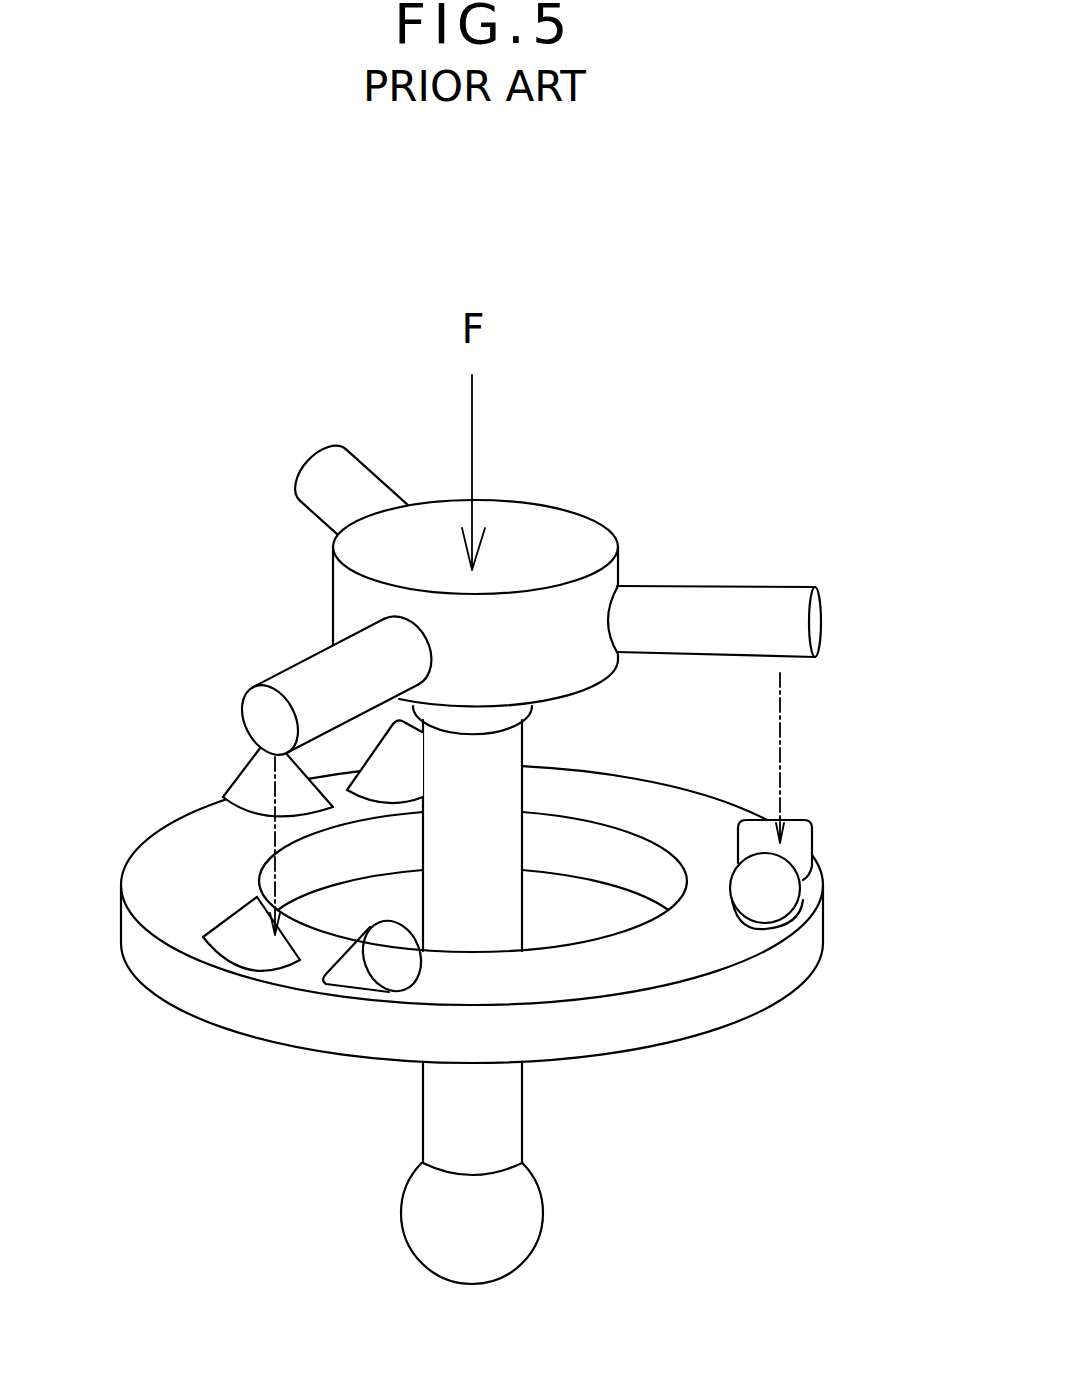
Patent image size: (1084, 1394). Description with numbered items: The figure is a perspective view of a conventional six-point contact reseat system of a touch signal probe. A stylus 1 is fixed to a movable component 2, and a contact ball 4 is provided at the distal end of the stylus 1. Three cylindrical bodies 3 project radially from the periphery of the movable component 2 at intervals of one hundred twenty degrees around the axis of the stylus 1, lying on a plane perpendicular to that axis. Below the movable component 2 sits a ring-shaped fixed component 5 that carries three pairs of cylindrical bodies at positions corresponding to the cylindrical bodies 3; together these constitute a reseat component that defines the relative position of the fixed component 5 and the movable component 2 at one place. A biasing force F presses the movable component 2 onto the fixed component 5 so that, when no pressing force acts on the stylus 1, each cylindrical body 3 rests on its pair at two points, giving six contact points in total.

The stylus 1 is at (450, 1085).
The movable component 2 is at (567, 527).
The cylindrical bodies 3 is at (327, 483).
The contact ball 4 is at (493, 1220).
The fixed component 5 is at (643, 1022).